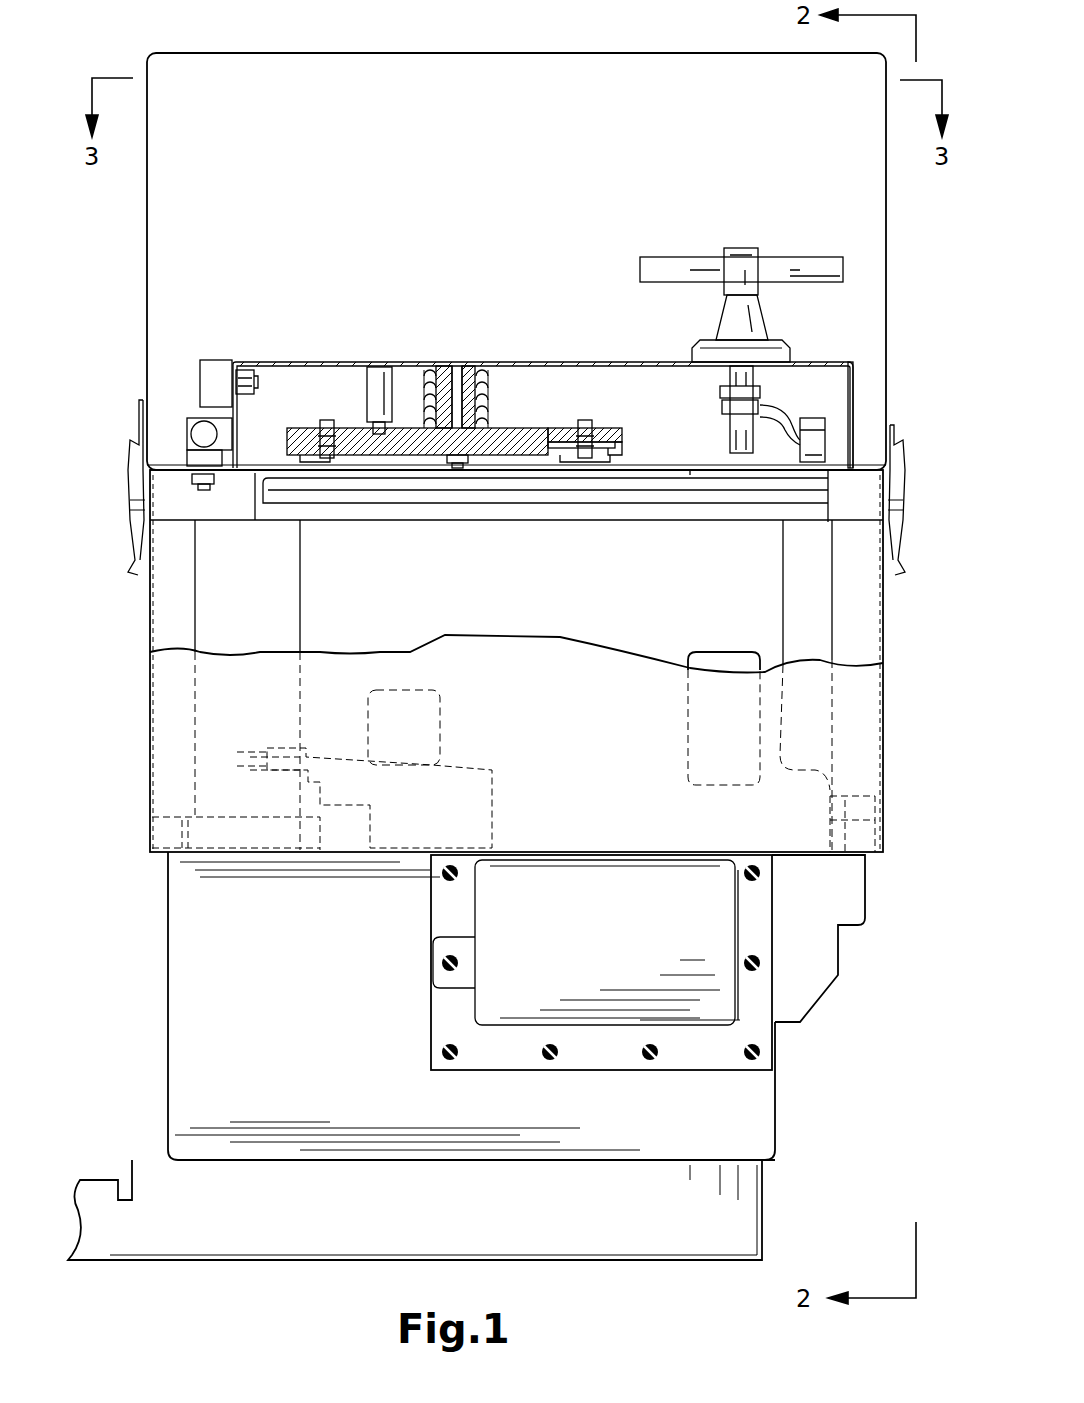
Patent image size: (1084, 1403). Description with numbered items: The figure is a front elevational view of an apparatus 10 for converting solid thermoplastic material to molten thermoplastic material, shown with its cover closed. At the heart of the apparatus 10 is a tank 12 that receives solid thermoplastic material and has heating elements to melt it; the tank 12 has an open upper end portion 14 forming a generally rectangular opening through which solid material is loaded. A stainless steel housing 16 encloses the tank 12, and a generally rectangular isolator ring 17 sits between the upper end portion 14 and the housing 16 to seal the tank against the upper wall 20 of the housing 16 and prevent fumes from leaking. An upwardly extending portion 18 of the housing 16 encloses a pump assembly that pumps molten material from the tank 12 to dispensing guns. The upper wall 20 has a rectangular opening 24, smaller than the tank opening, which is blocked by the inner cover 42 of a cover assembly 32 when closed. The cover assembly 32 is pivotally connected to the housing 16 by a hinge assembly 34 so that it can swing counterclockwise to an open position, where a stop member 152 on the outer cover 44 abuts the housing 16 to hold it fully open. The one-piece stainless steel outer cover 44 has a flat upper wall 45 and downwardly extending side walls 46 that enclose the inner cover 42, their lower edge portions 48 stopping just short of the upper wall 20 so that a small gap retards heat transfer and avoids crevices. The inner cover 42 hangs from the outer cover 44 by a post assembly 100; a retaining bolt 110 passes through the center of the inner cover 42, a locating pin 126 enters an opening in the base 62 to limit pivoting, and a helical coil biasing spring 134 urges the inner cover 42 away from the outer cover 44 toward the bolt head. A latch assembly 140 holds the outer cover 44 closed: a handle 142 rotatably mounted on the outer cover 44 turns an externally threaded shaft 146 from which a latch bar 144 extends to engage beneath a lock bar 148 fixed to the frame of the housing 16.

The apparatus 10 is at (150, 35).
The tank 12 is at (280, 622).
The upper end portion 14 is at (368, 498).
The housing 16 is at (128, 738).
The isolator ring 17 is at (580, 482).
The upwardly extending portion 18 is at (178, 222).
The upper wall 20 is at (240, 472).
The rectangular opening 24 is at (420, 470).
The cover assembly 32 is at (335, 350).
The hinge assembly 34 is at (198, 428).
The inner cover 42 is at (545, 420).
The outer cover 44 is at (868, 360).
The upper wall 45 is at (290, 360).
The side walls 46 is at (860, 432).
The lower edge portions 48 is at (862, 462).
The base 62 is at (505, 450).
The post assembly 100 is at (446, 352).
The retaining bolt 110 is at (452, 466).
The locating pin 126 is at (372, 380).
The biasing spring 134 is at (490, 385).
The latch assembly 140 is at (855, 250).
The handle 142 is at (680, 262).
The latch bar 144 is at (778, 420).
The threaded shaft 146 is at (742, 456).
The lock bar 148 is at (818, 425).
The stop member 152 is at (213, 384).